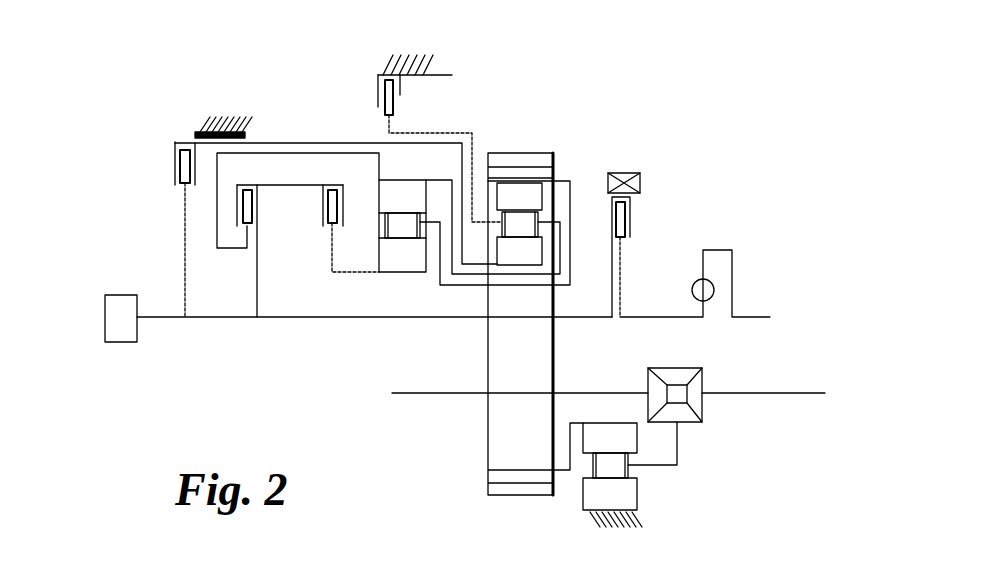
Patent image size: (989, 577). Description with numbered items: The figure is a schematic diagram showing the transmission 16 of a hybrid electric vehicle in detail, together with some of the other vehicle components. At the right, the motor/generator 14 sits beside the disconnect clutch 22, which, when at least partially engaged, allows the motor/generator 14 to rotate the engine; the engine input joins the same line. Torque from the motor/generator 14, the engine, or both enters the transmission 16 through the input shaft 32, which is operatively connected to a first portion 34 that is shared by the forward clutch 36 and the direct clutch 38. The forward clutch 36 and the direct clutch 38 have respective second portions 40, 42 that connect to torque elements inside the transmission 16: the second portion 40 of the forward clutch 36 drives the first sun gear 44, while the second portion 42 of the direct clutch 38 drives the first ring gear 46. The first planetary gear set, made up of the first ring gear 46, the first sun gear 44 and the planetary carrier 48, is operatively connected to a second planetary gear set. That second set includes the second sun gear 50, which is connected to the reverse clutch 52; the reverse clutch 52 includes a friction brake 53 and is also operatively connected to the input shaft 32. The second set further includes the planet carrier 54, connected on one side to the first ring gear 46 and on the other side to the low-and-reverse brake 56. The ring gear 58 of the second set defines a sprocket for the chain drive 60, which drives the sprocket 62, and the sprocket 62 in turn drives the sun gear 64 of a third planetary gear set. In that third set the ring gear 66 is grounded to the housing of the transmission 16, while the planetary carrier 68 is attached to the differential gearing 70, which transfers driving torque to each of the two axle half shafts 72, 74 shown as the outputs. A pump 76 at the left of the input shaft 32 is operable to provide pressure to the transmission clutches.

The motor/generator 14 is at (625, 173).
The transmission 16 is at (296, 76).
The disconnect clutch 22 is at (642, 209).
The input shaft 32 is at (320, 318).
The first portion 34 is at (297, 185).
The forward clutch 36 is at (314, 198).
The direct clutch 38 is at (228, 199).
The second portion 40 is at (328, 207).
The second portion 42 is at (243, 220).
The first sun gear 44 is at (405, 273).
The first ring gear 46 is at (400, 181).
The planetary carrier 48 is at (380, 228).
The second sun gear 50 is at (543, 253).
The reverse clutch 52 is at (166, 144).
The friction brake 53 is at (195, 133).
The planet carrier 54 is at (543, 226).
The low-and-reverse brake 56 is at (368, 82).
The ring gear 58 is at (543, 200).
The chain drive 60 is at (558, 164).
The sprocket 62 is at (516, 497).
The sun gear 64 is at (603, 423).
The ring gear 66 is at (640, 503).
The planetary carrier 68 is at (633, 472).
The differential gearing 70 is at (715, 399).
The axle half shaft 72 is at (810, 395).
The axle half shaft 74 is at (440, 394).
The pump 76 is at (105, 313).